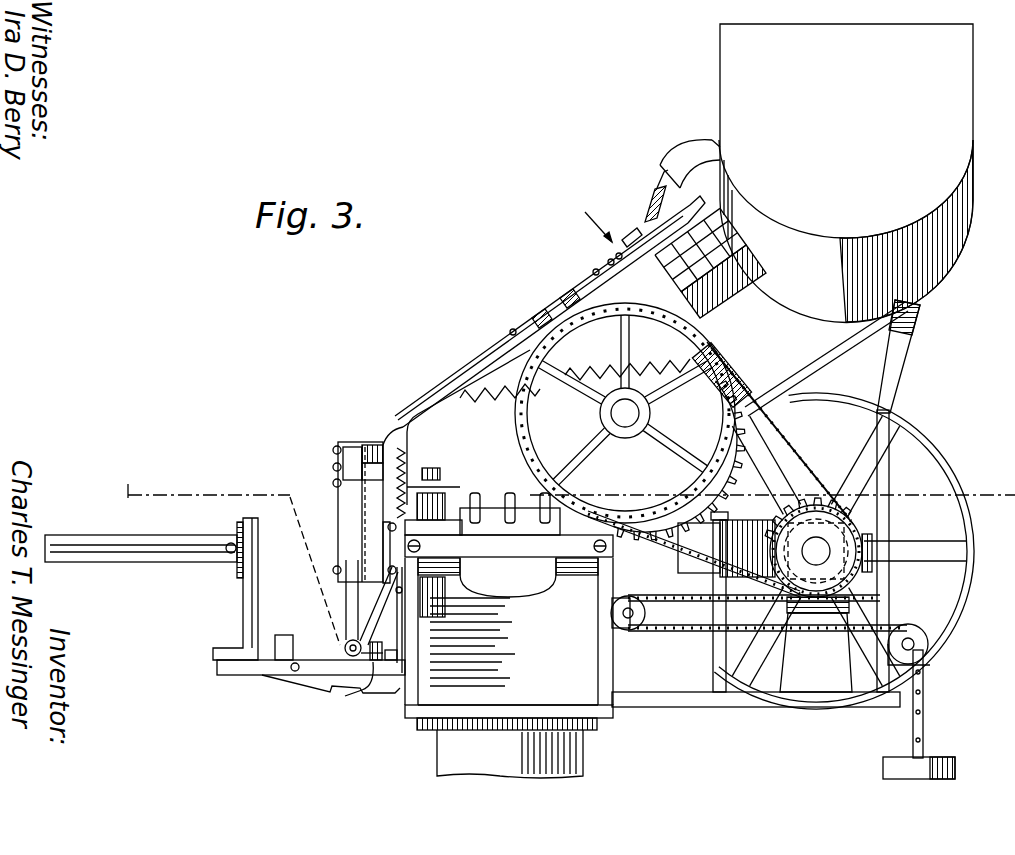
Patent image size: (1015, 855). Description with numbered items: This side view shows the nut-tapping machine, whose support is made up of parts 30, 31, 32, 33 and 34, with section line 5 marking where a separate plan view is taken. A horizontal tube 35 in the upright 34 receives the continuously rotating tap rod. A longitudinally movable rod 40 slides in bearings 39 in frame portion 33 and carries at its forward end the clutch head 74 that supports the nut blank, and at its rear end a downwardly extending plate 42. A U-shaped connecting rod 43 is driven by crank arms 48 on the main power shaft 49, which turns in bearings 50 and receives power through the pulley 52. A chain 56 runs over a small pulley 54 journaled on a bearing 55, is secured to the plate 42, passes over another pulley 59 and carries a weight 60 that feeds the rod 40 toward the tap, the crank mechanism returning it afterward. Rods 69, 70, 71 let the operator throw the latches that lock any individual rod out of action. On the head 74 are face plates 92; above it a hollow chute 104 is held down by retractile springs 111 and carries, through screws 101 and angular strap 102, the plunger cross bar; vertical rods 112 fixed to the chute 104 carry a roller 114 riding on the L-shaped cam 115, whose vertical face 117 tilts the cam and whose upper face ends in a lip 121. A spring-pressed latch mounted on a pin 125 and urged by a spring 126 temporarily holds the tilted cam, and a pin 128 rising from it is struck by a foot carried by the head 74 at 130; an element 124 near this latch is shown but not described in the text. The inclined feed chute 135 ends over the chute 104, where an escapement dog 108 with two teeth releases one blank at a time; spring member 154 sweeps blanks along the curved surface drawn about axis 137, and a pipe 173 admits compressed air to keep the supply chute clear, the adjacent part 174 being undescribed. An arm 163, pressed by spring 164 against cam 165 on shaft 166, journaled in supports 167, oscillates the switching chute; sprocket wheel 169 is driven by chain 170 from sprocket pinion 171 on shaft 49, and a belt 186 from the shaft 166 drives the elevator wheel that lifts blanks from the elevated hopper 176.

The section line 5 is at (564, 563).
The support part 30 is at (560, 758).
The support part 31 is at (762, 704).
The frame portion 32 is at (263, 675).
The frame portion 33 is at (413, 690).
The upright 34 is at (256, 598).
The horizontal tube 35 is at (88, 545).
The bearing 39 is at (447, 580).
The longitudinally movable rod 40 is at (676, 531).
The downwardly extending plate 42 is at (722, 648).
The connecting rod 43 is at (755, 579).
The crank arm 48 is at (870, 569).
The main power shaft 49 is at (818, 551).
The bearing 50 is at (828, 660).
The pulley 52 is at (955, 485).
The small pulley 54 is at (633, 631).
The bearing 55 is at (630, 606).
The chain 56 is at (924, 692).
The pulley 59 is at (910, 627).
The weight 60 is at (955, 765).
The latch rod 69 is at (472, 494).
The latch rod 70 is at (508, 494).
The latch rod 71 is at (543, 494).
The clutch head 74 is at (408, 470).
The face plate 92 is at (340, 497).
The screw 101 is at (336, 468).
The angular strap 102 is at (352, 420).
The hollow chute 104 is at (372, 430).
The escapement pawl 108 is at (388, 428).
The retractile spring 111 is at (336, 452).
The vertical rod 112 is at (402, 498).
The roller 114 is at (347, 641).
The cam 115 is at (320, 690).
The vertical cam face 117 is at (343, 653).
The lip 121 is at (350, 596).
The latch bar 124 is at (373, 628).
The pin 125 is at (388, 664).
The spring 126 is at (397, 672).
The pin 128 is at (367, 684).
The foot attachment point 130 is at (410, 564).
The feed chute 135 is at (505, 345).
The central axis 137 is at (600, 223).
The spring member 154 is at (567, 300).
The arm 163 is at (735, 336).
The spring 164 is at (500, 404).
The cam 165 is at (750, 393).
The shaft 166 is at (730, 360).
The support 167 is at (578, 521).
The sprocket wheel 169 is at (545, 345).
The chain 170 is at (793, 454).
The sprocket pinion 171 is at (773, 532).
The pipe 173 is at (648, 220).
The handle 174 is at (646, 202).
The hopper 176 is at (724, 58).
The belt 186 is at (752, 307).